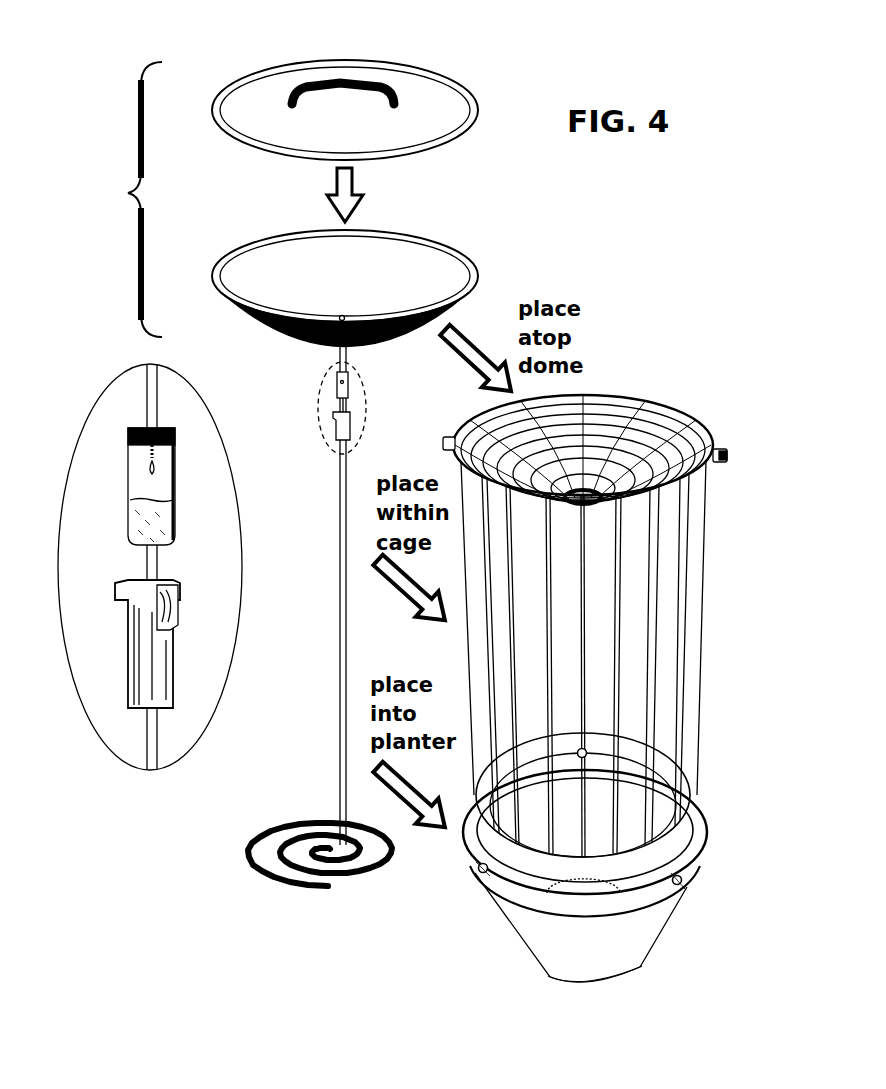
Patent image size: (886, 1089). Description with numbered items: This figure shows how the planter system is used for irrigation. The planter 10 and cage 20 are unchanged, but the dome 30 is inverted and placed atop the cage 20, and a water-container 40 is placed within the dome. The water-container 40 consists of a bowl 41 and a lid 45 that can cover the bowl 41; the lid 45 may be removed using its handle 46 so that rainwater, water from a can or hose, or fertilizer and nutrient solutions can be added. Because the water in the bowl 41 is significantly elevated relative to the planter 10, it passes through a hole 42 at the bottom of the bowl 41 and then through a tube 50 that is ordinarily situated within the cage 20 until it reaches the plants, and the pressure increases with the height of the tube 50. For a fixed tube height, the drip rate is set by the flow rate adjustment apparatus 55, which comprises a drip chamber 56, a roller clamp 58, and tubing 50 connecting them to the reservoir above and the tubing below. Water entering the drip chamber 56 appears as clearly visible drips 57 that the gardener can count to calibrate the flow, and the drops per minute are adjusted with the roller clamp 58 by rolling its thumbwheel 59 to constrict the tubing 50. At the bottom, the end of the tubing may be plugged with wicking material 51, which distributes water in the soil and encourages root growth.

The planter 10 is at (707, 823).
The cage 20 is at (712, 612).
The dome 30 is at (693, 418).
The water-container 40 is at (125, 193).
The bowl 41 is at (311, 292).
The hole 42 is at (345, 315).
The lid 45 is at (242, 75).
The handle 46 is at (340, 94).
The tube 50 is at (340, 578).
The wicking material 51 is at (318, 815).
The flow rate adjustment apparatus 55 is at (320, 427).
The drip chamber 56 is at (128, 489).
The drips 57 is at (160, 470).
The roller clamp 58 is at (128, 648).
The thumbwheel 59 is at (180, 603).